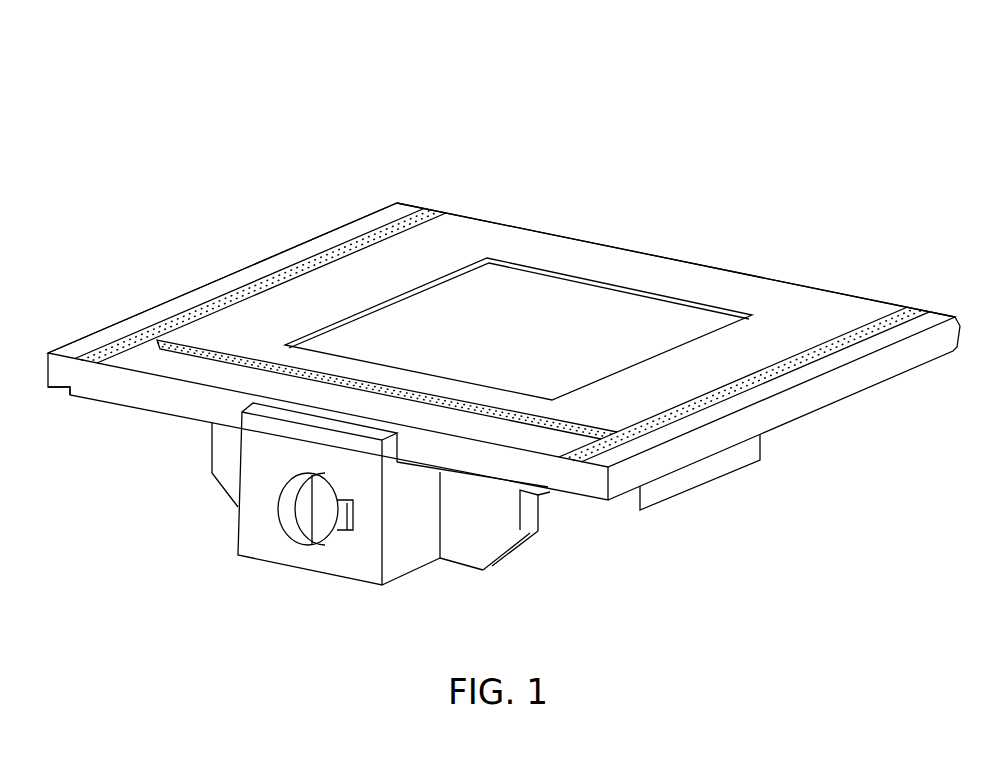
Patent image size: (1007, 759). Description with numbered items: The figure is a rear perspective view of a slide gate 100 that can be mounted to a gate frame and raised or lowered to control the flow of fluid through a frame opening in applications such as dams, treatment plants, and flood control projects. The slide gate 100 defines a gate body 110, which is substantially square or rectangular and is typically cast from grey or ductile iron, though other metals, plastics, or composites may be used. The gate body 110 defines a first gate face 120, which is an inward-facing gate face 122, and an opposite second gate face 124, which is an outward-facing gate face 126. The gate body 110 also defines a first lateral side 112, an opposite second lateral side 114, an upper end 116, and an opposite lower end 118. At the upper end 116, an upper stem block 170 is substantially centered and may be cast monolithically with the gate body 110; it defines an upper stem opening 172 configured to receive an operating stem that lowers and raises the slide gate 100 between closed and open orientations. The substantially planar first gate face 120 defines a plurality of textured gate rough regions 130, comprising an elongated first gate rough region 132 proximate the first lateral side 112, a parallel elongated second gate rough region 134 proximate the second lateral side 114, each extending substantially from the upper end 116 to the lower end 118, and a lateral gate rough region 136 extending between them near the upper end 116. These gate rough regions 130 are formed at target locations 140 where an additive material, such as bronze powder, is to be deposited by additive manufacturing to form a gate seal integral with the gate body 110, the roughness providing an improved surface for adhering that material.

The slide gate 100 is at (806, 107).
The gate body 110 is at (780, 302).
The first lateral side 112 is at (822, 395).
The second lateral side 114 is at (146, 308).
The upper end 116 is at (198, 407).
The lower end 118 is at (535, 232).
The first gate face 120 is at (518, 298).
The inward-facing gate face 122 is at (646, 264).
The second gate face 124 is at (401, 448).
The outward-facing gate face 126 is at (89, 406).
The gate rough regions 130 is at (502, 376).
The first gate rough region 132 is at (730, 392).
The second gate rough region 134 is at (317, 257).
The lateral gate rough region 136 is at (537, 417).
The target locations 140 is at (247, 290).
The upper stem block 170 is at (345, 563).
The upper stem opening 172 is at (293, 533).